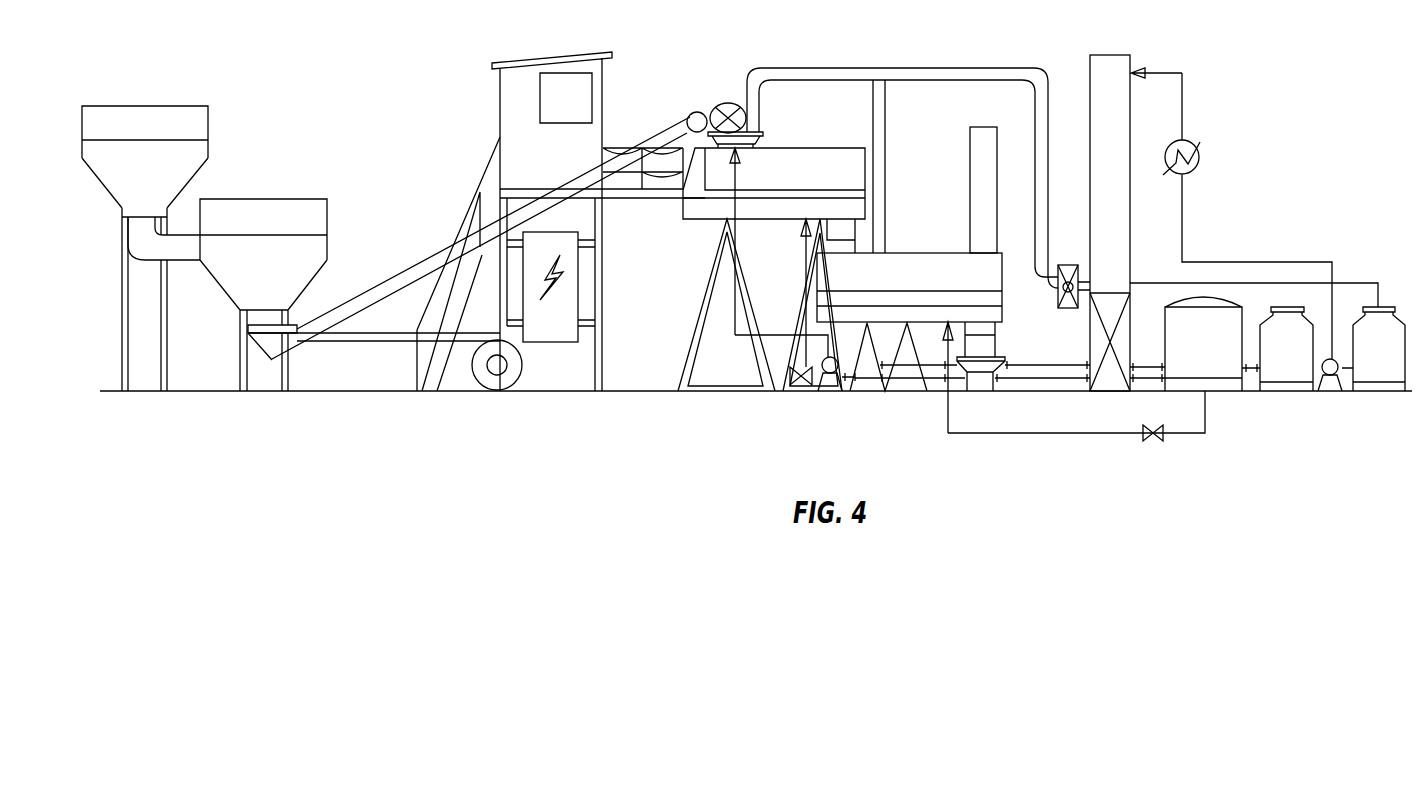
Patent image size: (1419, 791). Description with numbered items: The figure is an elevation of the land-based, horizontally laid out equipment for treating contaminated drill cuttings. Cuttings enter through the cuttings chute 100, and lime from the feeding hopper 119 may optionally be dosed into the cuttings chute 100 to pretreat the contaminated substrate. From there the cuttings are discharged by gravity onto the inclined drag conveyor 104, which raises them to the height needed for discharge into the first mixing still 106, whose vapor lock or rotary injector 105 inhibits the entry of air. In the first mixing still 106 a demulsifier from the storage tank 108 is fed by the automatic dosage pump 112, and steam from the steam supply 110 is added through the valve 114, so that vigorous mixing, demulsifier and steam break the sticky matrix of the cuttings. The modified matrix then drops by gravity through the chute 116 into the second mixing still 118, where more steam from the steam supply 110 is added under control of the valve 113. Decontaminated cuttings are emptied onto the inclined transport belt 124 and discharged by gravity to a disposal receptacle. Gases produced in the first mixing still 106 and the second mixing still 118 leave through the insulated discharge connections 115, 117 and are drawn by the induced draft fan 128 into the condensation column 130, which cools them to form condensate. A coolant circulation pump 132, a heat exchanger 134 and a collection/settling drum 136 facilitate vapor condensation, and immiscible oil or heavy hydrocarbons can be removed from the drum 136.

The cuttings chute 100 is at (283, 285).
The inclined drag conveyor 104 is at (428, 259).
The vapor lock or rotary injector 105 is at (728, 103).
The first mixing still 106 is at (818, 183).
The storage tank 108 is at (1307, 364).
The steam supply 110 is at (1223, 353).
The automatic dosage pump 112 is at (829, 390).
The valve 113 is at (1156, 440).
The valve 114 is at (809, 386).
The discharge connection 115 is at (766, 105).
The chute 116 is at (857, 233).
The discharge connection 117 is at (887, 120).
The second mixing still 118 is at (932, 285).
The feeding hopper 119 is at (168, 185).
The inclined transport belt 124 is at (977, 127).
The induced draft fan 128 is at (1067, 309).
The condensation column 130 is at (1128, 55).
The coolant circulation pump 132 is at (1331, 391).
The heat exchanger 134 is at (1200, 156).
The collection/settling drum 136 is at (1400, 364).